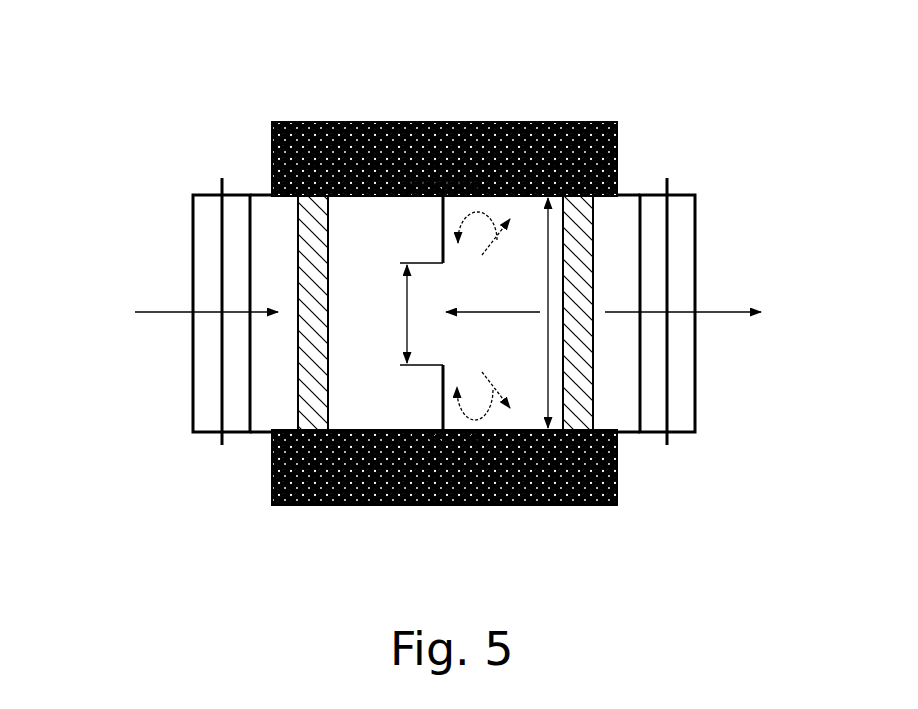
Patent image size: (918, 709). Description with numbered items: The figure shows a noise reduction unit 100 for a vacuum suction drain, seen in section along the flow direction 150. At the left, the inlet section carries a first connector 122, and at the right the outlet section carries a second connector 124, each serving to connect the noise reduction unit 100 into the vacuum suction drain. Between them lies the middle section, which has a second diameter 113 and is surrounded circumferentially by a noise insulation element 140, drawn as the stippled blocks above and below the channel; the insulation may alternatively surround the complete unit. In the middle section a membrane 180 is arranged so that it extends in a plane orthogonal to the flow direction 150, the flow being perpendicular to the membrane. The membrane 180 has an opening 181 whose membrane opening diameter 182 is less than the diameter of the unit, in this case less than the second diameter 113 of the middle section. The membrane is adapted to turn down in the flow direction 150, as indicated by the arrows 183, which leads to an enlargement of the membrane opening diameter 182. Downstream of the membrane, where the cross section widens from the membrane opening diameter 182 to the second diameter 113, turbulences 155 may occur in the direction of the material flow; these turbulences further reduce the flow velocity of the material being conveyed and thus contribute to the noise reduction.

The noise reduction unit 100 is at (276, 92).
The noise insulation element 140 is at (351, 118).
The first connector 122 is at (197, 188).
The second connector 124 is at (682, 188).
The flow direction 150 is at (147, 306).
The membrane 180 is at (443, 245).
The arrows 183 is at (443, 263).
The opening 181 is at (540, 312).
The second diameter 113 is at (548, 373).
The membrane opening diameter 182 is at (405, 318).
The turbulences 155 is at (473, 406).